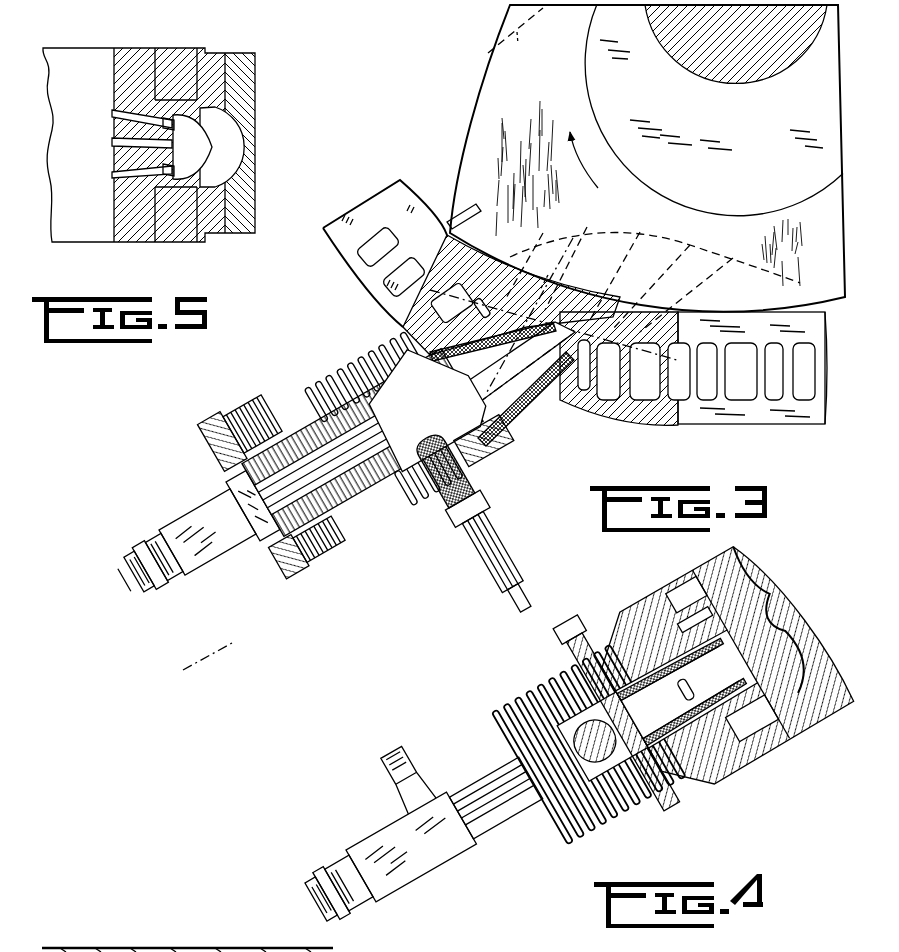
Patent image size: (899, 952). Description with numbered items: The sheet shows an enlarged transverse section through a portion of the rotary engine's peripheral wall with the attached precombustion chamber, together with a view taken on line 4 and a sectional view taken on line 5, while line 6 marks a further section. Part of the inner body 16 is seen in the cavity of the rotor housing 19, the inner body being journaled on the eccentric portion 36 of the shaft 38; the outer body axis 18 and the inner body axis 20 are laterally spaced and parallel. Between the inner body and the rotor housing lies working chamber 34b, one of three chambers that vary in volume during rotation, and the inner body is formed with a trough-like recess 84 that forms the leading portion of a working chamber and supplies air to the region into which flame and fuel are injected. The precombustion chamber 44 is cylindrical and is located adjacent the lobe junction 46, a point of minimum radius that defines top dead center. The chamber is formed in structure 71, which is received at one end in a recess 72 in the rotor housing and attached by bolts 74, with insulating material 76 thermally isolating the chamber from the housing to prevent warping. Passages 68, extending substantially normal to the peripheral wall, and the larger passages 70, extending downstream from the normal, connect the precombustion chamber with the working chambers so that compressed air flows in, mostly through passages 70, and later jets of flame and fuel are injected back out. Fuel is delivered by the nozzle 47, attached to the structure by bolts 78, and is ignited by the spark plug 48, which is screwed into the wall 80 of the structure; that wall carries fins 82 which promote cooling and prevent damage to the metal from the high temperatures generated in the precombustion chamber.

In FIG. 3, the inner body 16 is at (486, 70).
In FIG. 3, the axis of the outer body 18 is at (735, 18).
In FIG. 5, the rotor housing 19 is at (187, 48).
In FIG. 3, the rotor housing 19 is at (796, 426).
In FIG. 3, the axis of the inner body 20 is at (735, 65).
In FIG. 3, the working chamber 34b is at (385, 240).
In FIG. 3, the eccentric portion 36 is at (714, 110).
In FIG. 3, the shaft 38 is at (784, 100).
In FIG. 5, the precombustion chamber 44 is at (182, 948).
In FIG. 3, the precombustion chamber 44 is at (422, 401).
In FIG. 4, the precombustion chamber 44 is at (682, 690).
In FIG. 3, the lobe junction 46 is at (740, 302).
In FIG. 3, the nozzle 47 is at (220, 577).
In FIG. 4, the nozzle 47 is at (415, 876).
In FIG. 3, the spark plug 48 is at (493, 505).
In FIG. 5, the passages 68 is at (113, 141).
In FIG. 3, the passages 68 is at (548, 275).
In FIG. 3, the passages 70 is at (566, 320).
In FIG. 4, the passages 70 is at (766, 580).
In FIG. 3, the structure 71 is at (300, 428).
In FIG. 3, the recess 72 is at (513, 410).
In FIG. 4, the bolts 74 is at (580, 648).
In FIG. 3, the insulating material 76 is at (540, 368).
In FIG. 3, the bolts 78 is at (200, 467).
In FIG. 3, the wall 80 is at (487, 450).
In FIG. 3, the fins 82 is at (407, 523).
In FIG. 4, the fins 82 is at (503, 705).
In FIG. 3, the trough-like recesses 84 is at (518, 44).
In FIG. 3, the section line 4— 4 is at (663, 288).
In FIG. 3, the section line 5— 5 is at (572, 240).
In FIG. 3, the section line 6— 6 is at (425, 297).